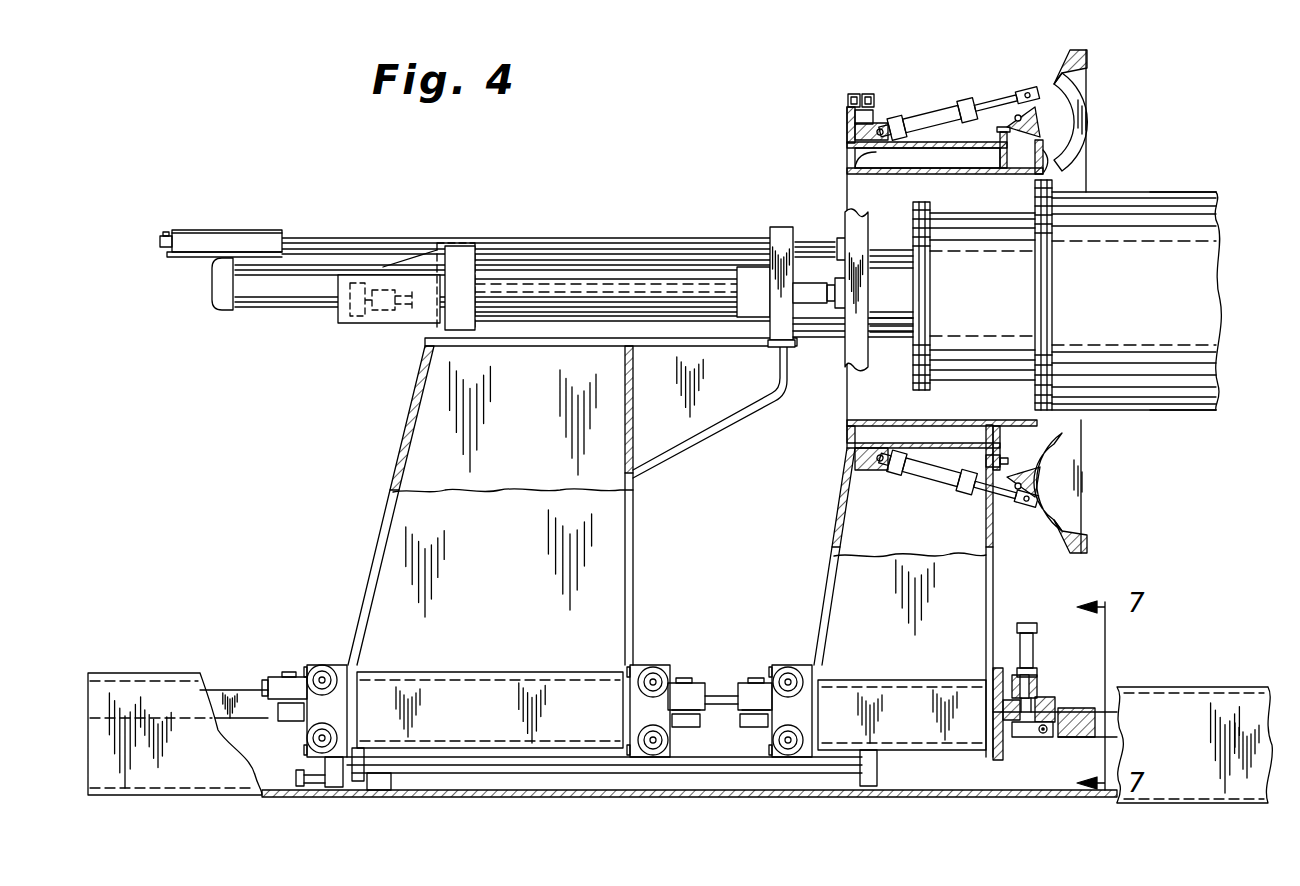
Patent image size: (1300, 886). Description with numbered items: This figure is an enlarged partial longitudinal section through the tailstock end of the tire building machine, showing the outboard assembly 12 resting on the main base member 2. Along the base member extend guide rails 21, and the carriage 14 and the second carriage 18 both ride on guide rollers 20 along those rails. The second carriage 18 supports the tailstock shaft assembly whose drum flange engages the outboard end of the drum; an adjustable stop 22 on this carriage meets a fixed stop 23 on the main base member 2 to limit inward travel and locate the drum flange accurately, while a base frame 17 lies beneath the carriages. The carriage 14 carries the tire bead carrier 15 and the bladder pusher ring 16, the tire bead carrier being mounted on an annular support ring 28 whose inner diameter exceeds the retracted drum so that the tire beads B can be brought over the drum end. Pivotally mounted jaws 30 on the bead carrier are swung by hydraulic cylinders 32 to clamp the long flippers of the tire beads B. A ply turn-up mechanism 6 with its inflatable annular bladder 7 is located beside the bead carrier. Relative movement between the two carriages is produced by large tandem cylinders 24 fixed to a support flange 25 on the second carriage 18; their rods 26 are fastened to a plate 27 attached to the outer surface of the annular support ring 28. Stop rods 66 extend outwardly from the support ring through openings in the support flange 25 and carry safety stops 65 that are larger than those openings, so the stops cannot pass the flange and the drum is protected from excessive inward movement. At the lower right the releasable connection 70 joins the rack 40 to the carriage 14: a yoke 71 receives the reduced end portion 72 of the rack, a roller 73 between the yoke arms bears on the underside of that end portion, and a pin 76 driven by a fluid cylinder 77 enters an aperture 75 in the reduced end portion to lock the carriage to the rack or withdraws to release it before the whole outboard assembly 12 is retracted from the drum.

The main base member 2 is at (236, 799).
The ply turn-up mechanism 6 is at (1146, 184).
The inflatable annular air bag or bladder 7 is at (1188, 200).
The outboard assembly 12 is at (828, 122).
The carriage 14 is at (837, 582).
The tire bead carrier 15 is at (1034, 152).
The bladder pusher ring 16 is at (1078, 49).
The base frame 17 is at (521, 765).
The second carriage 18 is at (387, 553).
The guide rollers 20 is at (328, 662).
The guide rails 21 is at (238, 692).
The adjustable stop 22 is at (326, 800).
The fixed stop 23 is at (380, 787).
The tandem cylinders 24 is at (293, 310).
The support flange 25 is at (773, 228).
The rods 26 is at (810, 297).
The plate 27 is at (867, 355).
The annular support ring 28 is at (853, 155).
The jaws 30 is at (1075, 87).
The hydraulic cylinders 32 is at (938, 106).
The rack 40 is at (1118, 710).
The safety stops 65 is at (237, 228).
The stop rods 66 is at (349, 236).
The releasable connection 70 is at (1046, 672).
The yoke 71 is at (1025, 738).
The reduced end portion 72 is at (1057, 708).
The roller 73 is at (1047, 734).
The aperture 75 is at (1003, 717).
The pin 76 is at (1027, 697).
The fluid cylinder 77 is at (1018, 623).
The tire beads B is at (1050, 158).